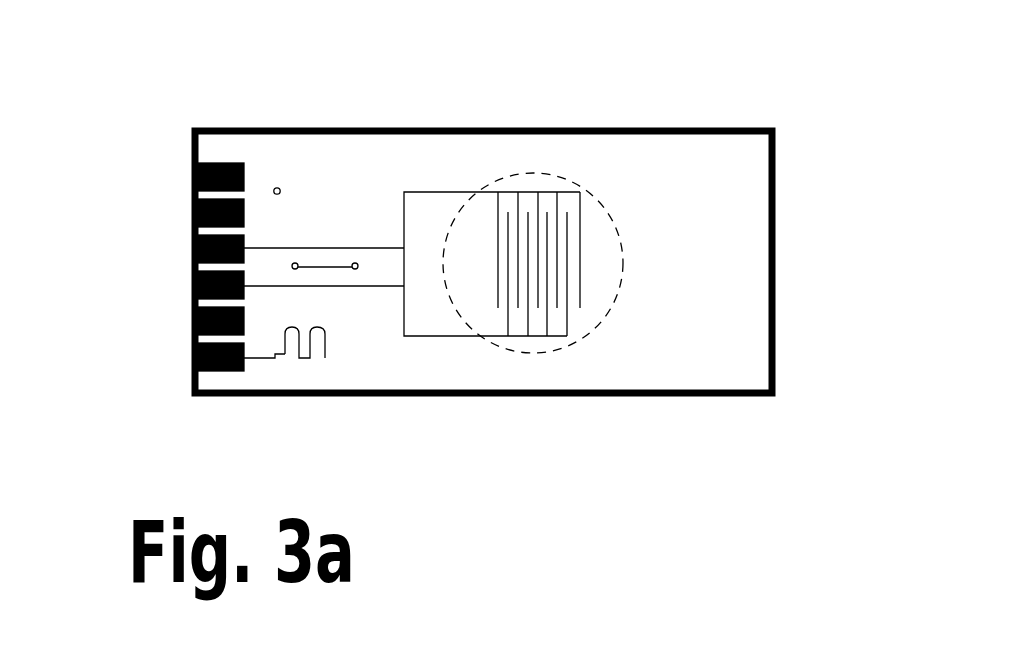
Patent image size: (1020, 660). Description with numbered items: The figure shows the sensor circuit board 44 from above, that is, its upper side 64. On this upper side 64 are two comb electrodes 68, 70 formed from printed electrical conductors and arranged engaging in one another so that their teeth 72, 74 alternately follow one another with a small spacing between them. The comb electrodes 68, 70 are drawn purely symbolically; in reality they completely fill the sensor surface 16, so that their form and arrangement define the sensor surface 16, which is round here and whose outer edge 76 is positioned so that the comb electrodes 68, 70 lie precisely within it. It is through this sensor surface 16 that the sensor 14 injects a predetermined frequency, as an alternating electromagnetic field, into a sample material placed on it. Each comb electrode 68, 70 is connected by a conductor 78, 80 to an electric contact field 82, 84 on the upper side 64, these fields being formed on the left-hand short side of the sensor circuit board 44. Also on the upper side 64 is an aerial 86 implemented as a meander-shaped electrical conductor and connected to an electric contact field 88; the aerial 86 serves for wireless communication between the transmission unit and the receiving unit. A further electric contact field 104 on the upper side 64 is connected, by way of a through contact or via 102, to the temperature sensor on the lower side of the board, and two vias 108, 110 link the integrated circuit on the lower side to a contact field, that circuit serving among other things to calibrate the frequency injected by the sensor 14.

The sensor 14 is at (476, 160).
The sensor surface 16 is at (600, 278).
The sensor circuit board 44 is at (802, 329).
The upper side 64 is at (745, 228).
The comb electrode 68 is at (533, 191).
The comb electrode 70 is at (540, 337).
The teeth 72 is at (584, 229).
The teeth 74 is at (507, 318).
The outer edge 76 is at (622, 254).
The conductor 78 is at (421, 191).
The conductor 80 is at (423, 337).
The electric contact field 82 is at (192, 250).
The electric contact field 84 is at (192, 287).
The aerial 86 is at (325, 358).
The electric contact field 88 is at (192, 358).
The via 102 is at (278, 187).
The electric contact field 104 is at (274, 190).
The via 108 is at (295, 263).
The via 110 is at (356, 263).